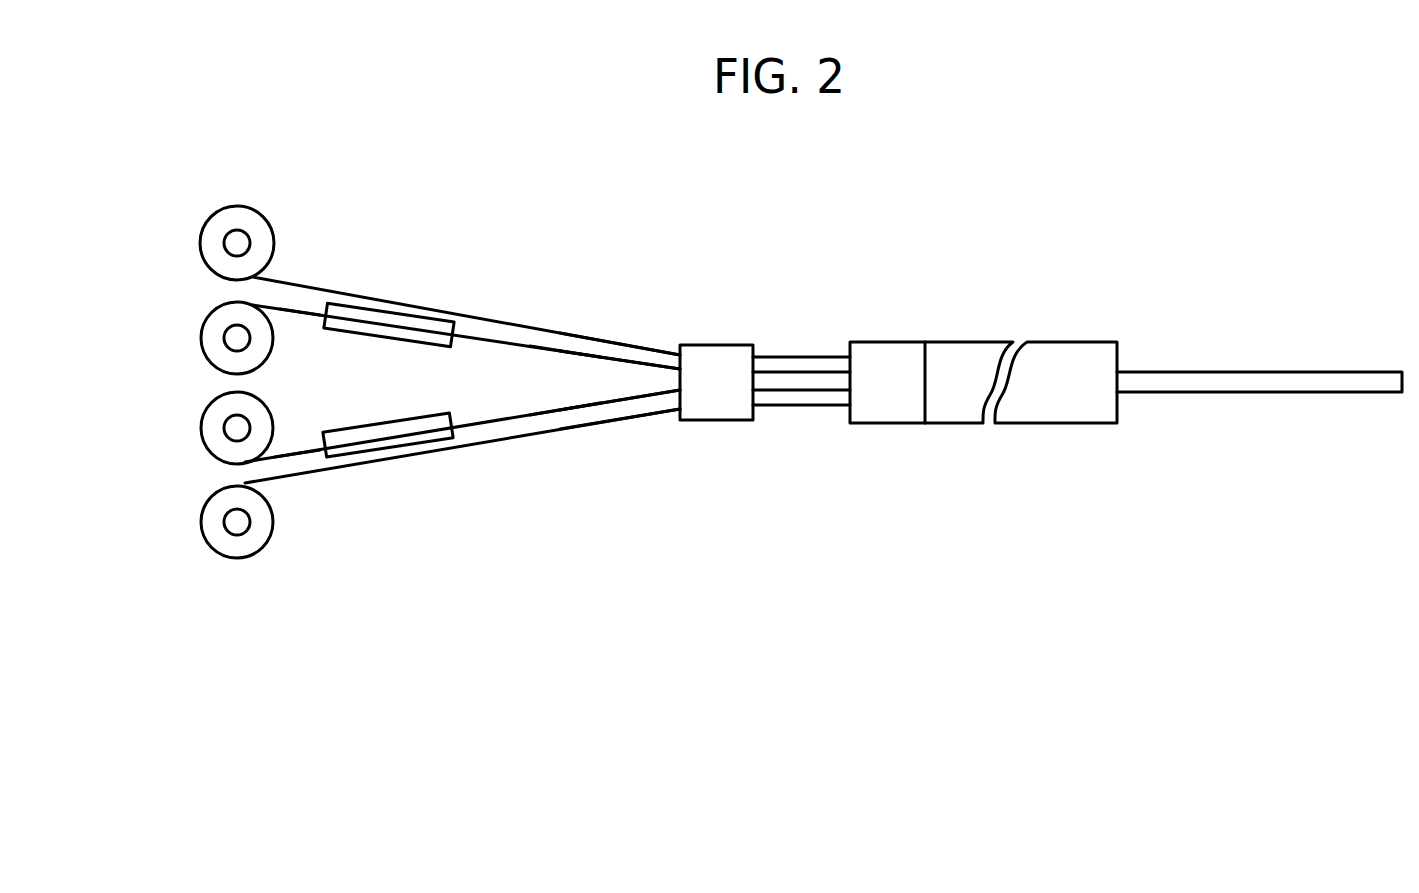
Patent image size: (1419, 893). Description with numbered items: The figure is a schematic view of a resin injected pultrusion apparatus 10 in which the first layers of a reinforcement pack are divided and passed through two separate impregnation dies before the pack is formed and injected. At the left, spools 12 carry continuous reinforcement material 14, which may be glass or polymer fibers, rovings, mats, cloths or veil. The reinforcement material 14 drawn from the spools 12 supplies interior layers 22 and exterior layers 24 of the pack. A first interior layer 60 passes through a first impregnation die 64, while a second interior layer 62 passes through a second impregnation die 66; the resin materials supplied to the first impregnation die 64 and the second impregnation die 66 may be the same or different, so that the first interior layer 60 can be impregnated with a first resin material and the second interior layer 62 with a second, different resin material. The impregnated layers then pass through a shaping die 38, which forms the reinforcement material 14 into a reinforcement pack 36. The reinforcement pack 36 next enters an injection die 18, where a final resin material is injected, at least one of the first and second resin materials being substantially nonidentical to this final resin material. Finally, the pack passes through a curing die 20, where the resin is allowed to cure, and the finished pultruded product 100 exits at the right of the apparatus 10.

The resin injected pultrusion apparatus 10 is at (602, 222).
The spools 12 is at (207, 253).
The reinforcement material 14 is at (308, 273).
The injection die 18 is at (900, 391).
The curing die 20 is at (1050, 414).
The interior layers 22 is at (548, 352).
The exterior layers 24 is at (584, 336).
The reinforcement pack 36 is at (795, 371).
The shaping die 38 is at (729, 394).
The first interior layer 60 is at (299, 312).
The second interior layer 62 is at (295, 453).
The first impregnation die 64 is at (400, 320).
The second impregnation die 66 is at (375, 440).
The pultruded product 100 is at (1248, 378).